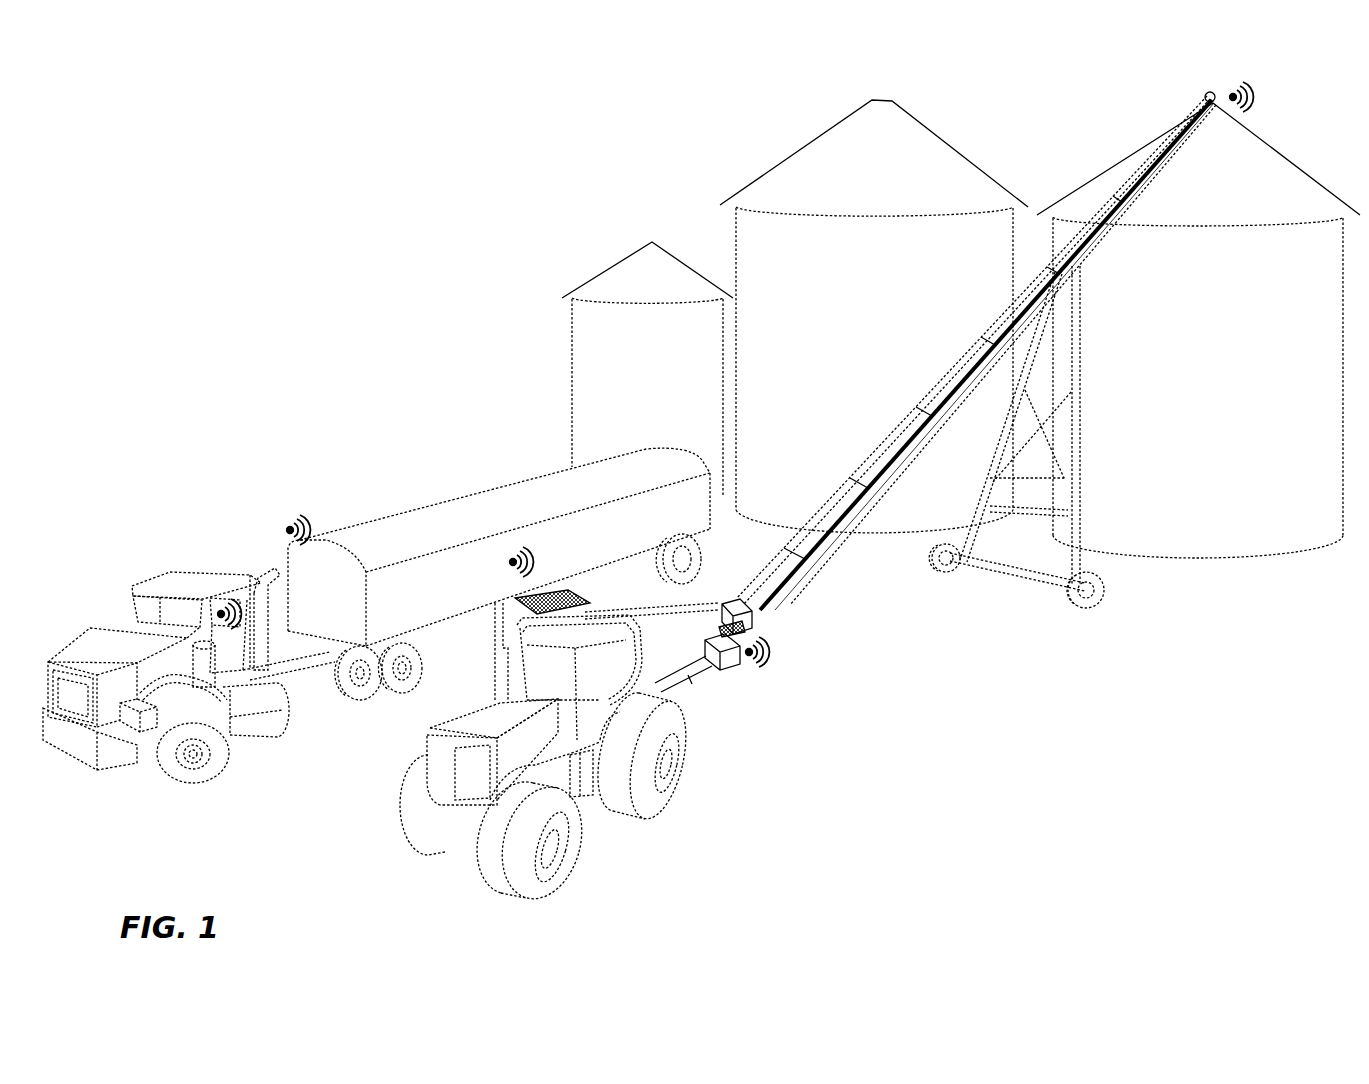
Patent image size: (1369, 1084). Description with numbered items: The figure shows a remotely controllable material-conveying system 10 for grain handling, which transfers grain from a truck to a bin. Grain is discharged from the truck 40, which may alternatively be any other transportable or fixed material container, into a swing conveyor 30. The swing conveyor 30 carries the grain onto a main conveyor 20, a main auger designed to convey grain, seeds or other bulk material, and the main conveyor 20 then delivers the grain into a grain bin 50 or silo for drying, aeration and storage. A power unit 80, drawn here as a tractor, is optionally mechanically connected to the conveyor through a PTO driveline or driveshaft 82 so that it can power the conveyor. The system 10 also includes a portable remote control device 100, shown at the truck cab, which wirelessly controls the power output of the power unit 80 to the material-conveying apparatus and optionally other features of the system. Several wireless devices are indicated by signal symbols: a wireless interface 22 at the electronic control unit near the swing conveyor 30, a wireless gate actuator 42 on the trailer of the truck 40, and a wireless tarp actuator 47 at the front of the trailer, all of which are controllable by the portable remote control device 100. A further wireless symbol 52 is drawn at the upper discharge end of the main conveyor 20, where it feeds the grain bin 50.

The material-conveying system 10 is at (266, 377).
The main conveyor 20 is at (787, 577).
The wireless interface 22 is at (763, 660).
The swing conveyor 30 is at (742, 618).
The truck 40 is at (404, 536).
The wireless gate actuator 42 is at (511, 559).
The wireless tarp actuator 47 is at (286, 527).
The grain bin 50 is at (1239, 527).
The bin wireless sensor 52 is at (1248, 92).
The power unit 80 is at (480, 758).
The PTO driveline or driveshaft 82 is at (690, 675).
The portable remote control device 100 is at (218, 610).